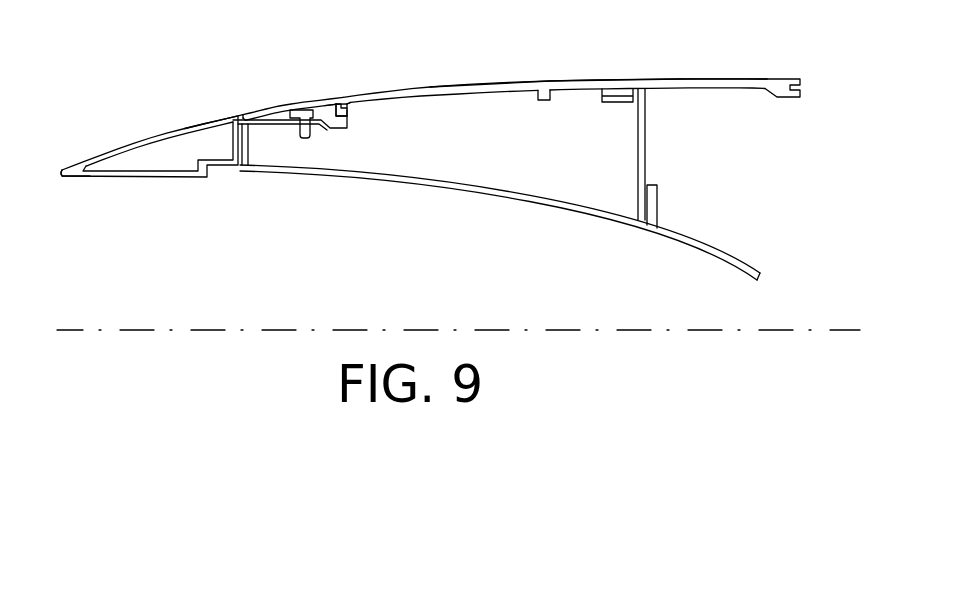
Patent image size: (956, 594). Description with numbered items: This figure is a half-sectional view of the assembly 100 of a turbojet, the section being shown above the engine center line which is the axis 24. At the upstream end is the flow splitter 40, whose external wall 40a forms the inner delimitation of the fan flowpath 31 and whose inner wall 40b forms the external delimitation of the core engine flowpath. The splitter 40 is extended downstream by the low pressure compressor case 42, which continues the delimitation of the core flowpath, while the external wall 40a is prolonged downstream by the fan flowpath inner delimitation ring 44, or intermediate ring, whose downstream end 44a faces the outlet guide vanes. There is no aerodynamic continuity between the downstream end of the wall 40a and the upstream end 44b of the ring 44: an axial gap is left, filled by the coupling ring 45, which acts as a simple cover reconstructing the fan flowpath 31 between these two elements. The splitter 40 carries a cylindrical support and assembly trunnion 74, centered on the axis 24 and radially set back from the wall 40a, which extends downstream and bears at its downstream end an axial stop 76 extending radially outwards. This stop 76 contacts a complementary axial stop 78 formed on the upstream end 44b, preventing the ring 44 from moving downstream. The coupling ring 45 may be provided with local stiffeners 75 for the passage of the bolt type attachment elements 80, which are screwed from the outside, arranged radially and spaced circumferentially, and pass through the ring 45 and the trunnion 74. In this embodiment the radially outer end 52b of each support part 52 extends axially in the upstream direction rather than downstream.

The axis 24 is at (783, 329).
The fan flowpath 31 is at (685, 61).
The flow splitter 40 is at (115, 149).
The external wall 40a is at (212, 123).
The inner wall 40b is at (62, 178).
The low pressure compressor case 42 is at (410, 188).
The fan flowpath inner delimitation ring 44 is at (548, 79).
The downstream end 44a is at (773, 85).
The upstream end 44b is at (337, 95).
The coupling ring 45 is at (277, 89).
The support part 52 is at (657, 152).
The radially outer end 52b is at (652, 94).
The support and assembly trunnion 74 is at (272, 122).
The local stiffeners 75 is at (318, 115).
The axial stop 76 is at (351, 106).
The complementary axial stop 78 is at (346, 101).
The bolt type attachment elements 80 is at (303, 104).
The assembly 100 is at (351, 73).